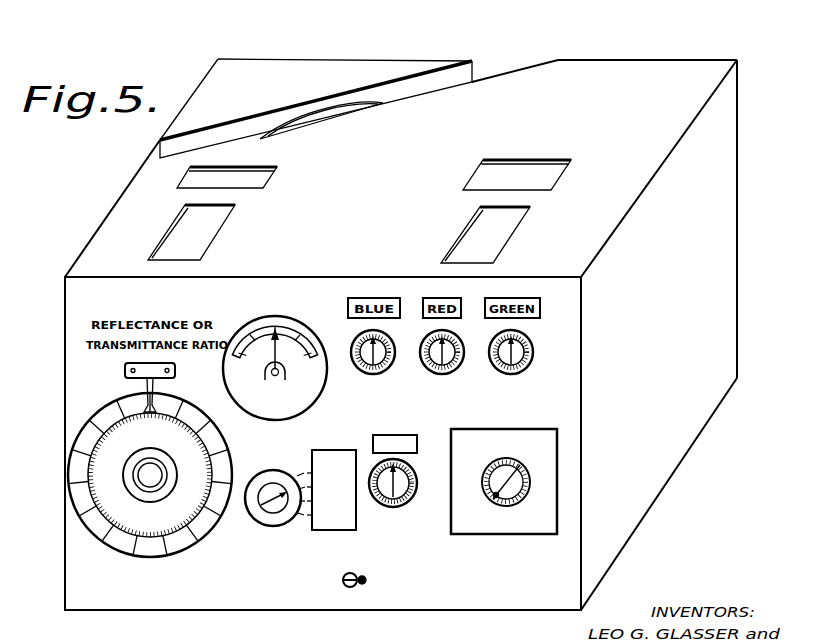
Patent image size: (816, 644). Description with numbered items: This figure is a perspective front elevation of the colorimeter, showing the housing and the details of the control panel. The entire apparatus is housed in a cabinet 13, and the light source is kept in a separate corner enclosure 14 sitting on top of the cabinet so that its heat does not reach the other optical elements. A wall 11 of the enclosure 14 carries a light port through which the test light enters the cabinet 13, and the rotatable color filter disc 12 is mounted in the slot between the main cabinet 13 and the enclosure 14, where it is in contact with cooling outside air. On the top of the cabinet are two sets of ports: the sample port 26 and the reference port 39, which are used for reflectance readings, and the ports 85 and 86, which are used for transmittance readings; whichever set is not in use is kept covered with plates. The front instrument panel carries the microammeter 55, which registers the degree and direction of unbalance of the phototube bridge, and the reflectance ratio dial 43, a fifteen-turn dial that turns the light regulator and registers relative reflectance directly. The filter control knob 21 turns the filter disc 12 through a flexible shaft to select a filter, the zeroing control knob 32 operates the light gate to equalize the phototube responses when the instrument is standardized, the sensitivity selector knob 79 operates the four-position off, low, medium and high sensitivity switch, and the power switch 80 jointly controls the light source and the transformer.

The wall of enclosure 11 is at (448, 73).
The rotatable color filter disc 12 is at (360, 102).
The cabinet 13 is at (733, 233).
The corner enclosure 14 is at (278, 64).
The filter control knob 21 is at (512, 505).
The sample port 26 is at (168, 230).
The zeroing control knob 32 is at (398, 503).
The reference port 39 is at (511, 237).
The reflectance ratio dial 43 is at (150, 475).
The microammeter 55 is at (270, 316).
The sensitivity selector knob 79 is at (274, 513).
The power switch 80 is at (352, 588).
The transmittance port 85 is at (255, 173).
The transmittance port 86 is at (522, 170).